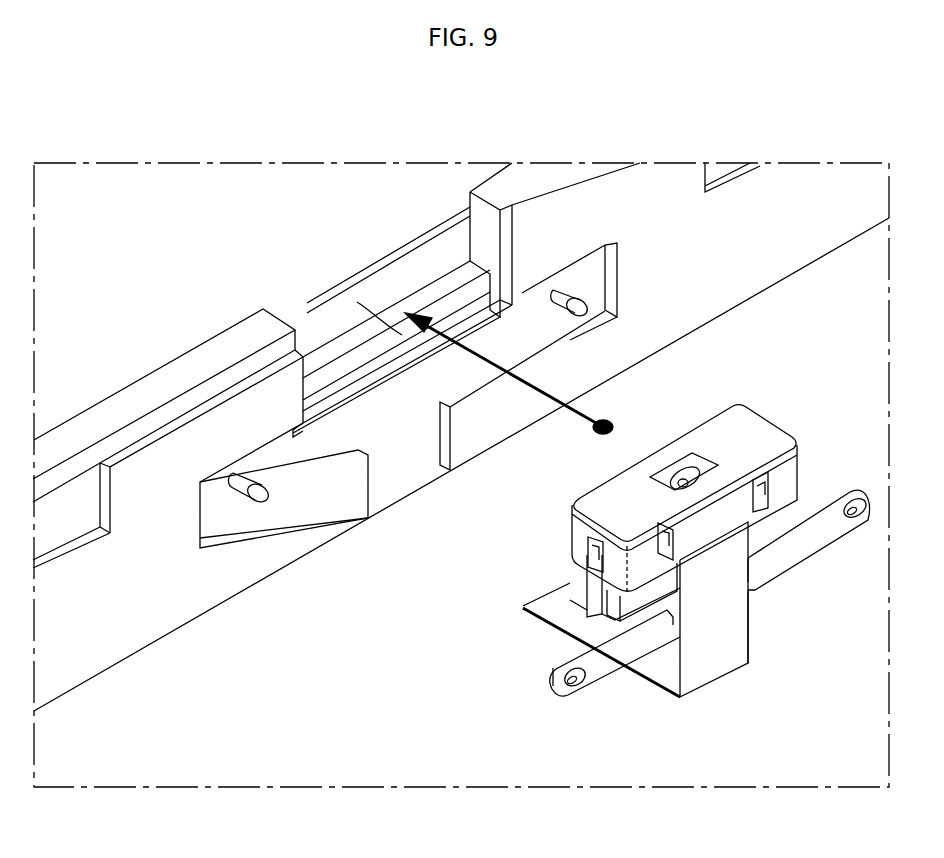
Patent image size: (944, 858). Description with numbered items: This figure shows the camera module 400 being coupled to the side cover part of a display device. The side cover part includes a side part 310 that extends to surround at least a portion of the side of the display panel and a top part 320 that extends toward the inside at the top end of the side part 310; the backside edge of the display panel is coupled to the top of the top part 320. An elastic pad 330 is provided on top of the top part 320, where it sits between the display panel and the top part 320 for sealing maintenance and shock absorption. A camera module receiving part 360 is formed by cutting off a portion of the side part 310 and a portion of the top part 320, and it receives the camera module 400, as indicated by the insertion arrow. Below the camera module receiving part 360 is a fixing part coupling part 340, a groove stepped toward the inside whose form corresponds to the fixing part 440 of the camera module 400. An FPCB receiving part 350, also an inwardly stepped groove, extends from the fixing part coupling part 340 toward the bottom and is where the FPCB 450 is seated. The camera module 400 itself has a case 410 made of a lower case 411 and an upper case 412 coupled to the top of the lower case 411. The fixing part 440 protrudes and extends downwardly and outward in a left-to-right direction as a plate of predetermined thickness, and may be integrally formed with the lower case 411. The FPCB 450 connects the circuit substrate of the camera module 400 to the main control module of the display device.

The side part 310 is at (520, 297).
The top part 320 is at (488, 252).
The elastic pad 330 is at (528, 180).
The fixing part coupling part 340 is at (292, 449).
The FPCB receiving part 350 is at (408, 447).
The camera module receiving part 360 is at (383, 318).
The camera module 400 is at (641, 577).
The case 410 is at (606, 551).
The lower case 411 is at (592, 590).
The upper case 412 is at (612, 508).
The fixing part 440 is at (598, 668).
The FPCB 450 is at (717, 658).